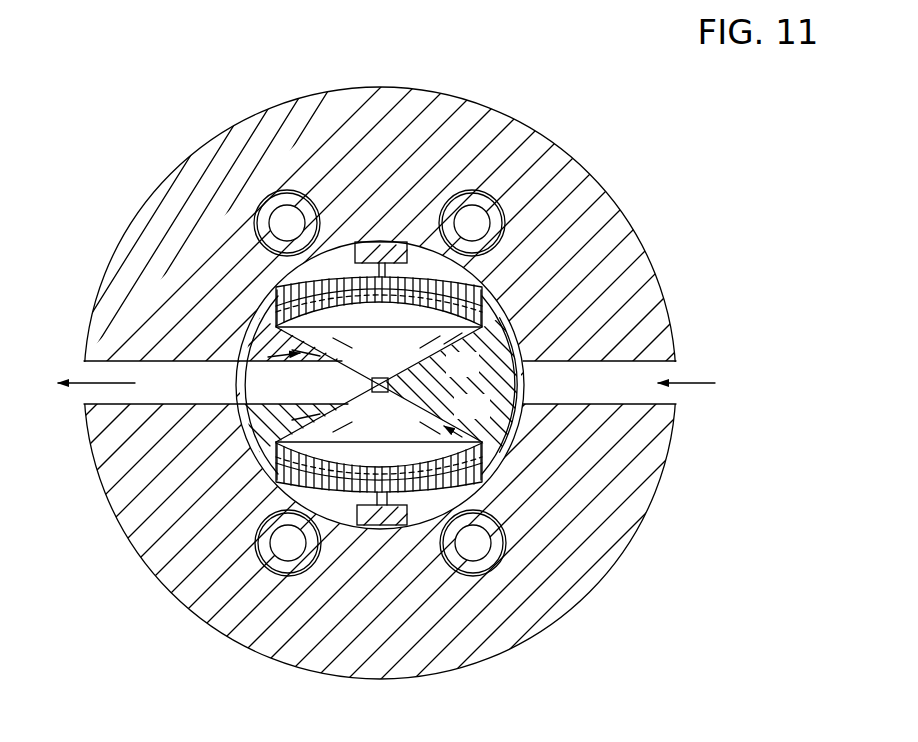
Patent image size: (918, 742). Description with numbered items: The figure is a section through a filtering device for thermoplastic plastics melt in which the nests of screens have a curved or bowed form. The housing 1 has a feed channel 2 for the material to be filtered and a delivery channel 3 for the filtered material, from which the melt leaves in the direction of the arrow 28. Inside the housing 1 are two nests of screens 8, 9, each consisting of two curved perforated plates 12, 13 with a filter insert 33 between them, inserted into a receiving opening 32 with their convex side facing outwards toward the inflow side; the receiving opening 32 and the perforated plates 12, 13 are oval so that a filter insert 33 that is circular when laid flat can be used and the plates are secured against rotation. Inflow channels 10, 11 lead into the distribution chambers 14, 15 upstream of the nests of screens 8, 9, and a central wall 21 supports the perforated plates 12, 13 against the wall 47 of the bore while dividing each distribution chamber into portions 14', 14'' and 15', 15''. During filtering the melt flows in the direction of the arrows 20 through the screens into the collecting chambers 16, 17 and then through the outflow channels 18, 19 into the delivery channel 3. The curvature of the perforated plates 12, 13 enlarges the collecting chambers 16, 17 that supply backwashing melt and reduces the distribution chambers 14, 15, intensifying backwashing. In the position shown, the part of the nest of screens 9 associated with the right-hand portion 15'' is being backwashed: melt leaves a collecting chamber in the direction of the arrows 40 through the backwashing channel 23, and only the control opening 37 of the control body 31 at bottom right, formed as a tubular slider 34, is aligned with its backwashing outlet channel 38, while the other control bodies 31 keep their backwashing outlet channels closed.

The housing 1 is at (618, 182).
The feed channel 2 is at (658, 366).
The delivery channel 3 is at (104, 410).
The nest of screens 8 is at (272, 288).
The nest of screens 9 is at (276, 490).
The inflow channel 10 is at (396, 240).
The inflow channel 11 is at (449, 498).
The perforated plate 12 is at (258, 412).
The perforated plate 13 is at (276, 464).
The distribution chamber 14 is at (418, 273).
The portion of distribution chamber 14' is at (235, 263).
The portion of distribution chamber 14'' is at (437, 249).
The distribution chamber 15 is at (379, 510).
The portion of distribution chamber 15' is at (311, 531).
The portion of distribution chamber 15'' is at (467, 543).
The collecting chamber 16 is at (512, 333).
The collecting chamber 17 is at (287, 372).
The outflow channel 18 is at (252, 332).
The outflow channel 19 is at (236, 360).
The arrows 20 is at (366, 342).
The central wall 21 is at (380, 268).
The backwashing channel 23 is at (379, 384).
The arrow 28 is at (86, 378).
The control body 31 is at (262, 192).
The receiving opening 32 is at (506, 550).
The filter insert 33 is at (272, 444).
The slider 34 is at (255, 552).
The control opening 37 is at (272, 572).
The backwashing outlet channel 38 is at (283, 577).
The arrows 40 is at (449, 385).
The wall of the bore 47 is at (508, 330).